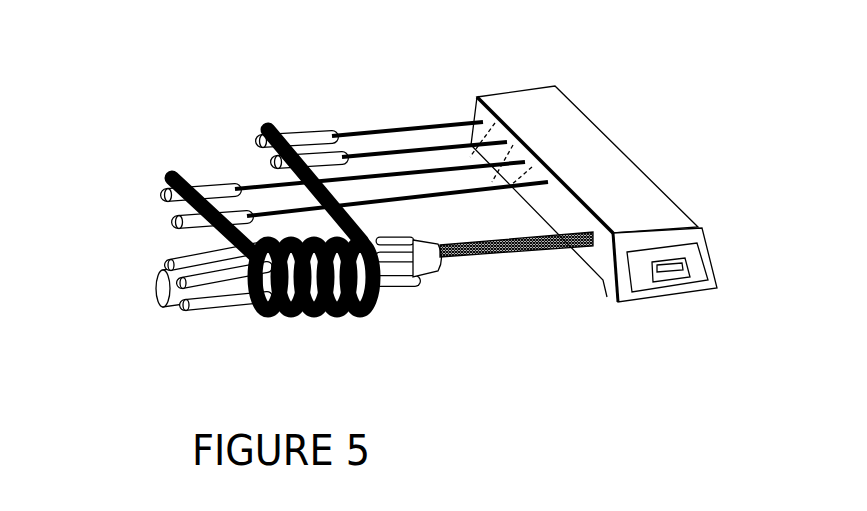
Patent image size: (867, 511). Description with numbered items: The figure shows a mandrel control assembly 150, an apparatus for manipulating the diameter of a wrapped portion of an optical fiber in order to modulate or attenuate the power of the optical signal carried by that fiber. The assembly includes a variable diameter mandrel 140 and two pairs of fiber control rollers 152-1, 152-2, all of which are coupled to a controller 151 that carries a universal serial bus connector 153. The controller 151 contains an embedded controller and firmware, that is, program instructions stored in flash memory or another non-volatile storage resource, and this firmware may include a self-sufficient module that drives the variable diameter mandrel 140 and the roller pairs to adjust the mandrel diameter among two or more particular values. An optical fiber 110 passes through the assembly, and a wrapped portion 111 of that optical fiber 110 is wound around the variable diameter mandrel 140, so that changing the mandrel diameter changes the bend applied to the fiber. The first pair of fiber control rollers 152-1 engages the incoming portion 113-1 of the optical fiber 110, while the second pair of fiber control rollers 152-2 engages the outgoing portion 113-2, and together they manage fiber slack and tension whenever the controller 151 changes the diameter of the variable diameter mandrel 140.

The optical fiber 110 is at (339, 282).
The wrapped portion 111 is at (337, 323).
The incoming portion 113-1 is at (261, 124).
The outgoing portion 113-2 is at (184, 182).
The variable diameter mandrel 140 is at (429, 279).
The mandrel control assembly 150 is at (542, 32).
The controller 151 is at (617, 142).
The first pair of fiber control rollers 152-1 is at (333, 135).
The second pair of fiber control rollers 152-2 is at (168, 197).
The universal serial bus (USB) connector 153 is at (673, 282).